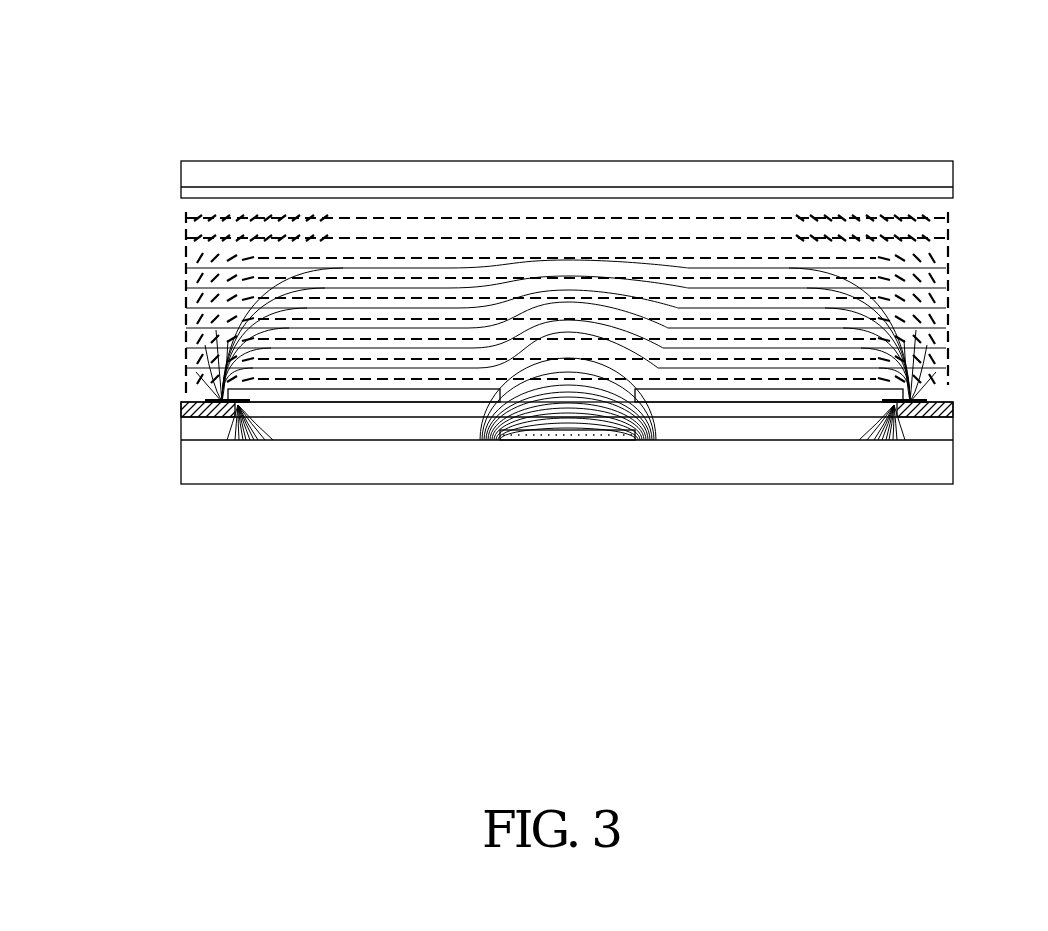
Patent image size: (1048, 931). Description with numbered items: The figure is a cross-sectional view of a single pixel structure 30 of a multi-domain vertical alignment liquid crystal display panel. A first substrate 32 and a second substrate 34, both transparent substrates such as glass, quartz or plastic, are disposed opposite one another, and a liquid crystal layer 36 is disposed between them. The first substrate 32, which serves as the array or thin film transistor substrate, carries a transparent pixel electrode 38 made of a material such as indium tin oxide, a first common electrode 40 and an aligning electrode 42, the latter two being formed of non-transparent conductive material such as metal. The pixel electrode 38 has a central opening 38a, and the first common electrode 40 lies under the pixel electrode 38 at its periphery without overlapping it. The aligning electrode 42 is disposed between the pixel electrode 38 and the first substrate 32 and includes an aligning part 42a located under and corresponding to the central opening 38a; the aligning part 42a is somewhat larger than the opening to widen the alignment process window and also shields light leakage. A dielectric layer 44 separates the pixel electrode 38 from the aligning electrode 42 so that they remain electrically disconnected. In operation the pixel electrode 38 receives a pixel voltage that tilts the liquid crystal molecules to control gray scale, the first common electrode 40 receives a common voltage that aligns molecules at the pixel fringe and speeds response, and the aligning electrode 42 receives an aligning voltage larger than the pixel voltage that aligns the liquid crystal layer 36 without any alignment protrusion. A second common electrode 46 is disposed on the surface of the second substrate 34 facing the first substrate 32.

The pixel structure 30 is at (920, 112).
The first substrate 32 is at (945, 466).
The second substrate 34 is at (940, 172).
The liquid crystal layer 36 is at (186, 238).
The pixel electrode 38 is at (862, 395).
The central opening 38a is at (590, 386).
The first common electrode 40 is at (953, 412).
The aligning electrode 42 is at (605, 450).
The aligning part 42a is at (557, 445).
The dielectric layer 44 is at (358, 472).
The second common electrode 46 is at (940, 194).